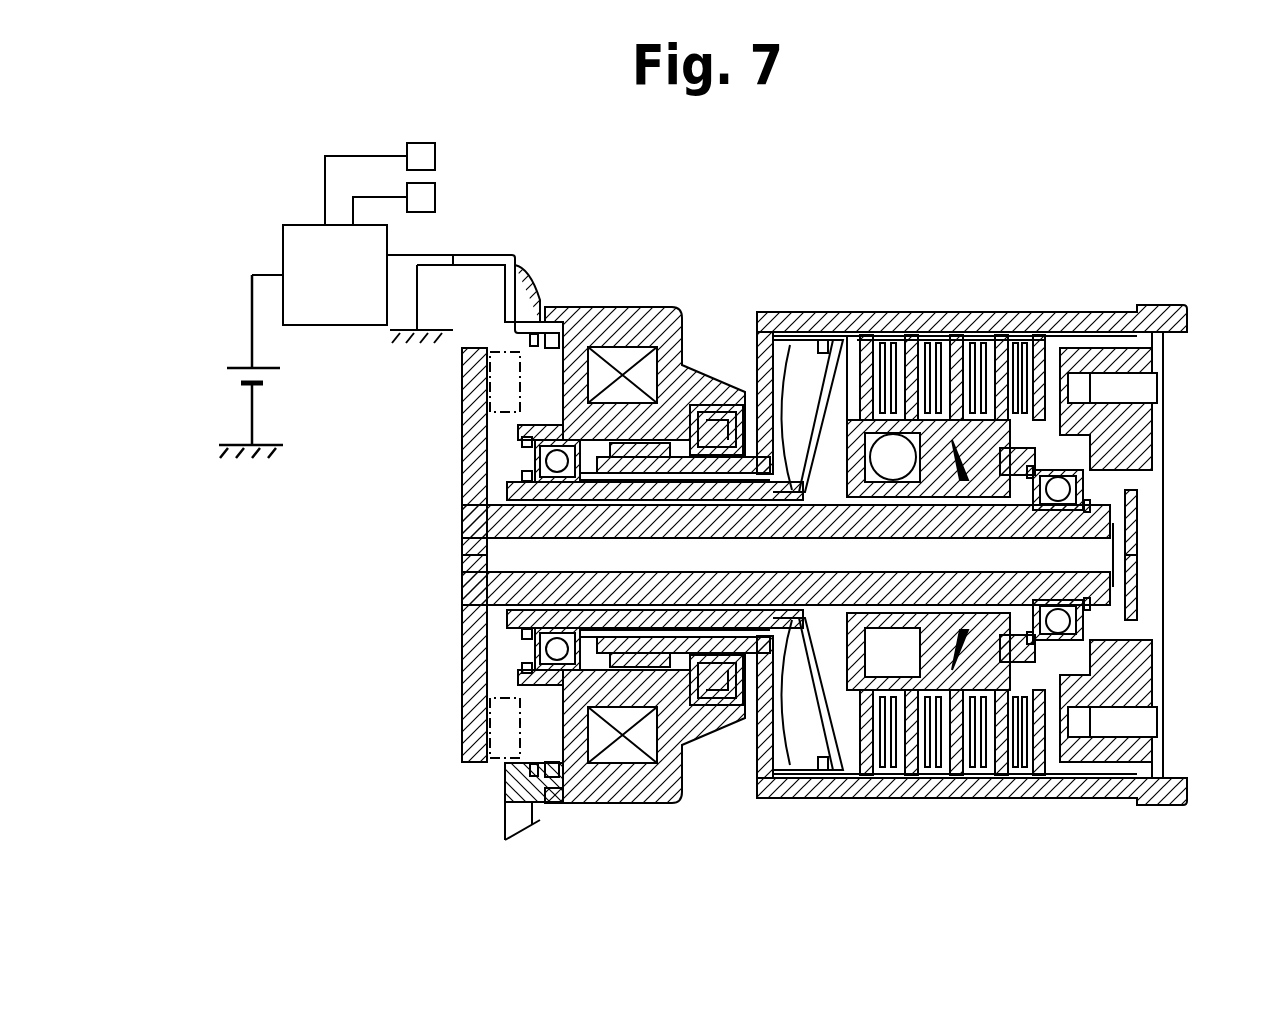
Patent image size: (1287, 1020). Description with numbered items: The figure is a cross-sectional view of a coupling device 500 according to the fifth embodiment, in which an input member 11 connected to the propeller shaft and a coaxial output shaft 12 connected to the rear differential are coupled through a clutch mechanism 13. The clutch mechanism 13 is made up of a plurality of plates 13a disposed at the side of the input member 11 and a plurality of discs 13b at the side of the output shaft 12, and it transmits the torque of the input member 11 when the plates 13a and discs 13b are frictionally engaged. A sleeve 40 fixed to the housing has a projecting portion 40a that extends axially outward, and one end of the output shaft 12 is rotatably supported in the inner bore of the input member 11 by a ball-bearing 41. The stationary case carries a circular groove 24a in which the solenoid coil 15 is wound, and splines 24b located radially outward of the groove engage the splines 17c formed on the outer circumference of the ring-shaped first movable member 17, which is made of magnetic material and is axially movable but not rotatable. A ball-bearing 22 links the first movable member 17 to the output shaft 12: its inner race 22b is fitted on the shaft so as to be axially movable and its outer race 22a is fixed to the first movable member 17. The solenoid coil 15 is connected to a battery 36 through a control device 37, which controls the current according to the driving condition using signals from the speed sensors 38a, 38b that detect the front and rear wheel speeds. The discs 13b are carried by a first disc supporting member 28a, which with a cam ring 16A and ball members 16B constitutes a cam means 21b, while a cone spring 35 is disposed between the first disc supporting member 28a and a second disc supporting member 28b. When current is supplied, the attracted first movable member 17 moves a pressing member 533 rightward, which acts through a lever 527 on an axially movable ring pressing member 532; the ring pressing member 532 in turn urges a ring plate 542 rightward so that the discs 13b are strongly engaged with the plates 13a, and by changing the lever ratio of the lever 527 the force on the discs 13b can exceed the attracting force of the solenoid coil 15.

The coupling device 500 is at (996, 506).
The input member 11 is at (1172, 423).
The output shaft 12 is at (463, 610).
The clutch mechanism 13 is at (1015, 305).
The plates 13a is at (922, 335).
The discs 13b is at (955, 333).
The solenoid coil 15 is at (620, 350).
The cam ring 16A is at (853, 790).
The ball members 16B is at (907, 770).
The first movable member 17 is at (578, 388).
The splines 17c is at (562, 333).
The cam means 21b is at (902, 608).
The ball-bearing 22 is at (520, 466).
The outer race 22a is at (521, 441).
The inner race 22b is at (505, 492).
The circular groove 24a is at (647, 745).
The splines 24b is at (513, 770).
The first disc supporting member 28a is at (867, 498).
The second disc supporting member 28b is at (1040, 512).
The cone spring 35 is at (1093, 450).
The battery 36 is at (241, 365).
The control device 37 is at (298, 245).
The speed sensor 38a is at (427, 150).
The speed sensor 38b is at (427, 197).
The sleeve 40 is at (766, 765).
The projecting portion 40a is at (692, 655).
The ball-bearing 41 is at (1094, 618).
The lever 527 is at (805, 338).
The ring pressing member 532 is at (858, 333).
The pressing member 533 is at (768, 345).
The ring plate 542 is at (870, 338).